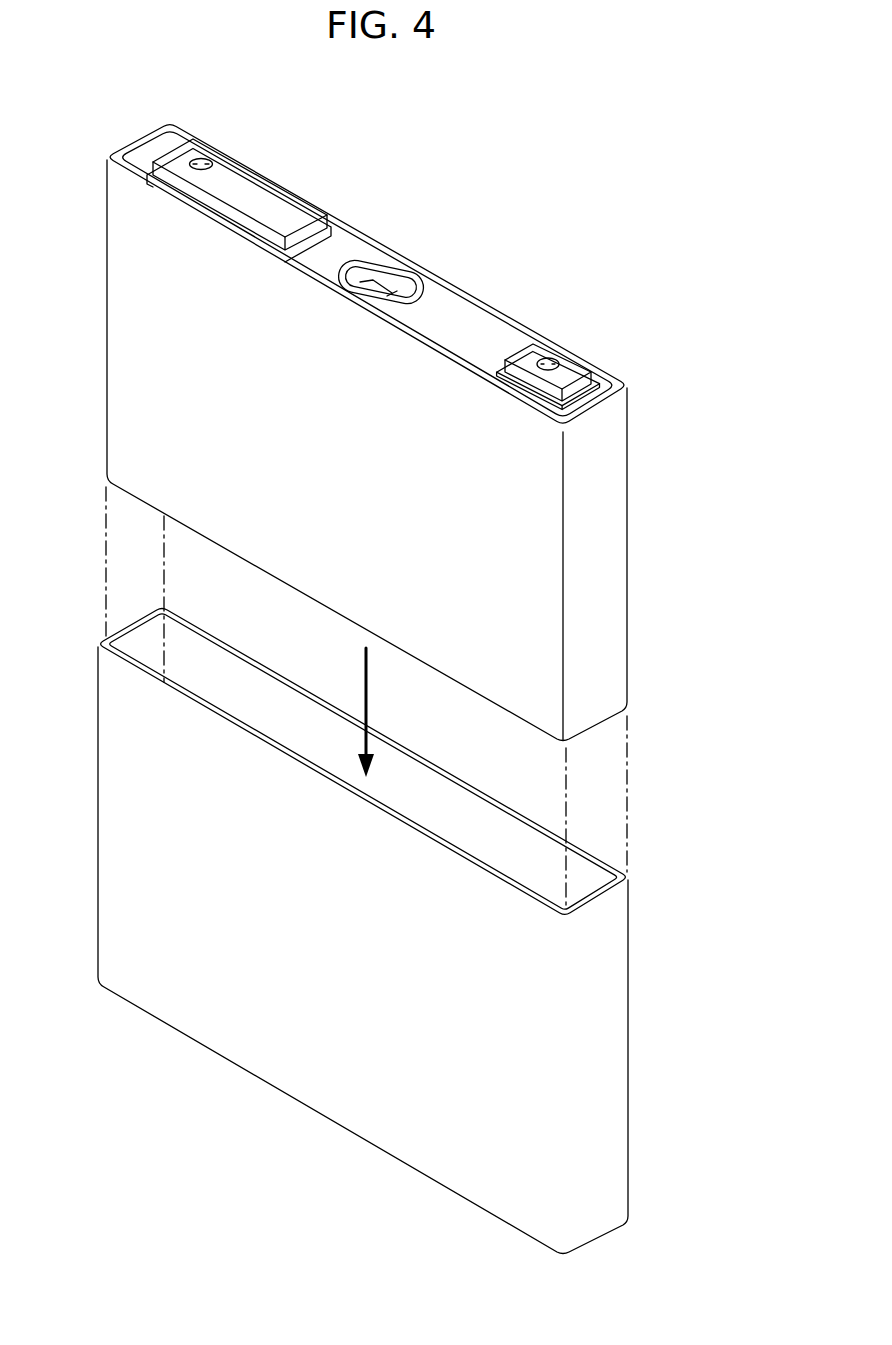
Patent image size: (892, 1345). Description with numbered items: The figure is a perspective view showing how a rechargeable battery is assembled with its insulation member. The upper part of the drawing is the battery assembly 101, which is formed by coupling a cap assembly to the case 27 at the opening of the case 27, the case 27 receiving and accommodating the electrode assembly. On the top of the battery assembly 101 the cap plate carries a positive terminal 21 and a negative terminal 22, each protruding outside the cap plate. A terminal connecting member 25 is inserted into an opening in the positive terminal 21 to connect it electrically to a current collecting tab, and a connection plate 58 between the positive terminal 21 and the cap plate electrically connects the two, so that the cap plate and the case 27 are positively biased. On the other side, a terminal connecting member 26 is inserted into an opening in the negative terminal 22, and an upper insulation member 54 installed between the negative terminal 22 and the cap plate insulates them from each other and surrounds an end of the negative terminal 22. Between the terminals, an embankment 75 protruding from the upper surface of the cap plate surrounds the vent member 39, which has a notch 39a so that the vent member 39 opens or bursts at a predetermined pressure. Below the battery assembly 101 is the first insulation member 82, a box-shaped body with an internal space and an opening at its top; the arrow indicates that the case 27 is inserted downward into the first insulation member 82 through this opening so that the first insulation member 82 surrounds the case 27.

The battery assembly 101 is at (387, 488).
The case 27 is at (120, 377).
The positive terminal 21 is at (572, 365).
The negative terminal 22 is at (267, 198).
The terminal connecting member 25 is at (548, 360).
The terminal connecting member 26 is at (202, 160).
The upper insulation member 54 is at (163, 154).
The connection plate 58 is at (595, 382).
The embankment 75 is at (355, 262).
The vent member 39 is at (372, 275).
The notch 39a is at (390, 286).
The first insulation member 82 is at (265, 1055).